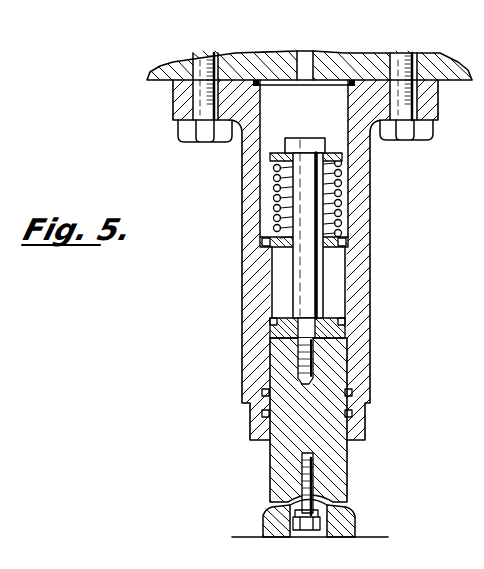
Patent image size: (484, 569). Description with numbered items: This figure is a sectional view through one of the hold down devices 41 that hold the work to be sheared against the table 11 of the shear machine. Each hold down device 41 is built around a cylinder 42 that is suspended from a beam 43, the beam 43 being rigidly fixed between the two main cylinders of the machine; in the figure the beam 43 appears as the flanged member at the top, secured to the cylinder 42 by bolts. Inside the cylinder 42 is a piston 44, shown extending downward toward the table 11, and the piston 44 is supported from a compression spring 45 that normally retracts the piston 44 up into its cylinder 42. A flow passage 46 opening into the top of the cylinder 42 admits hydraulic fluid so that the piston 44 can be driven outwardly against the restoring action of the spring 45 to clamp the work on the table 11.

The table 11 is at (232, 537).
The hold down device 41 is at (400, 251).
The cylinder 42 is at (242, 267).
The beam 43 is at (173, 63).
The piston 44 is at (335, 407).
The compression spring 45 is at (273, 183).
The flow passage 46 is at (307, 52).